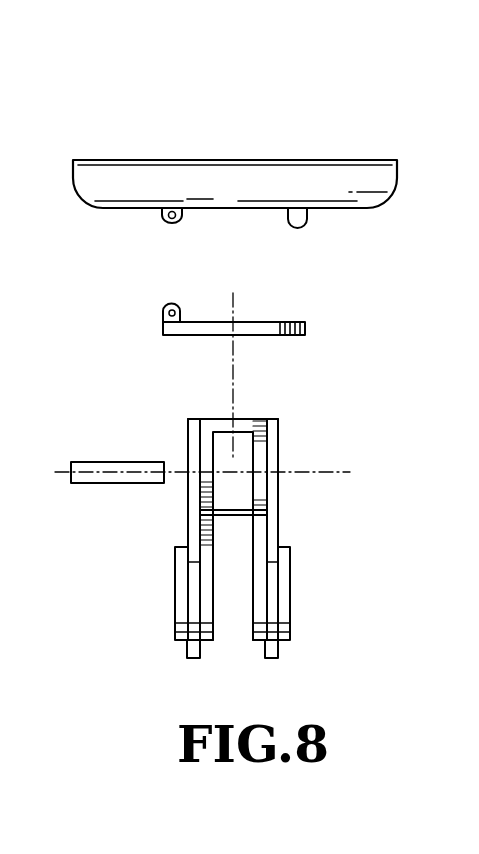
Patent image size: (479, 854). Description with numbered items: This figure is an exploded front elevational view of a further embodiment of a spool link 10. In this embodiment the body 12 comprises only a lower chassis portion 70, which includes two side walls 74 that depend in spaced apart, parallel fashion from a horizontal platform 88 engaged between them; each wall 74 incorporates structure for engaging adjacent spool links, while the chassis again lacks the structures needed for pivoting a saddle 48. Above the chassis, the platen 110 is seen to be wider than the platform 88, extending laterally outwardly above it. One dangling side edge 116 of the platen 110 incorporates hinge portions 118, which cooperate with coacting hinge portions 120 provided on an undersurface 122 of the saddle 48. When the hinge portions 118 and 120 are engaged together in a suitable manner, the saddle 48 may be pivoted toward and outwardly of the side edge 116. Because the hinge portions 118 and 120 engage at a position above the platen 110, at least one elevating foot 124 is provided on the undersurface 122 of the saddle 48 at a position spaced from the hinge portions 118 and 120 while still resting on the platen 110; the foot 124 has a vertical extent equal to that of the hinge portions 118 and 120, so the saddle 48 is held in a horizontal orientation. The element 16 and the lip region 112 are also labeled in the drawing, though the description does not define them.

The spool link 10 is at (269, 144).
The body 12 is at (239, 518).
The tray 16 is at (268, 163).
The saddle 48 is at (201, 186).
The lower chassis portion 70 is at (158, 626).
The side walls 74 is at (197, 512).
The horizontal platform 88 is at (249, 419).
The platen 110 is at (217, 367).
The tray lip 112 is at (392, 188).
The side edge 116 is at (153, 330).
The hinge portions 118 is at (163, 306).
The coacting hinge portions 120 is at (163, 219).
The undersurface 122 is at (239, 208).
The elevating foot 124 is at (300, 227).